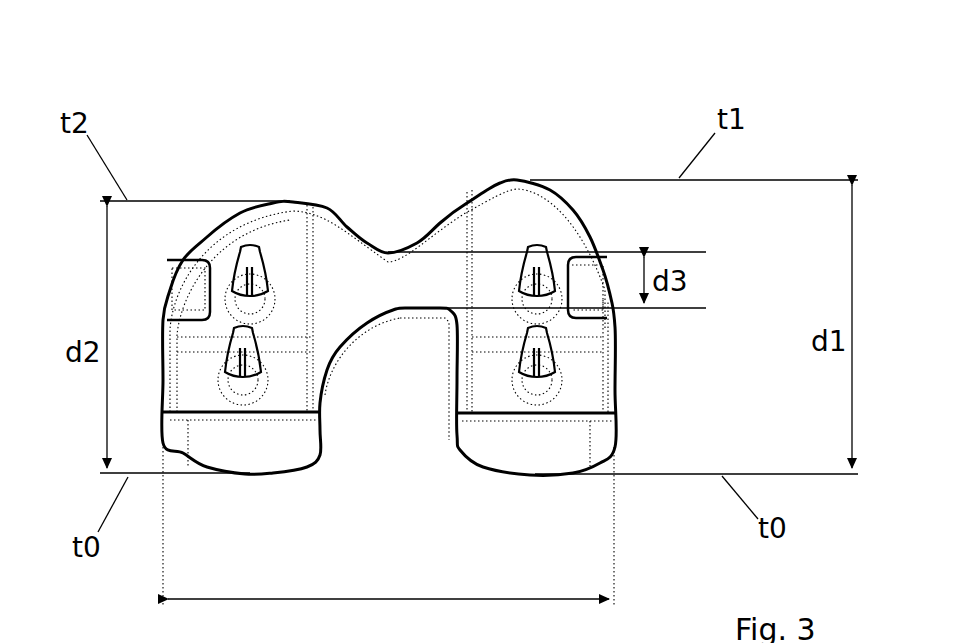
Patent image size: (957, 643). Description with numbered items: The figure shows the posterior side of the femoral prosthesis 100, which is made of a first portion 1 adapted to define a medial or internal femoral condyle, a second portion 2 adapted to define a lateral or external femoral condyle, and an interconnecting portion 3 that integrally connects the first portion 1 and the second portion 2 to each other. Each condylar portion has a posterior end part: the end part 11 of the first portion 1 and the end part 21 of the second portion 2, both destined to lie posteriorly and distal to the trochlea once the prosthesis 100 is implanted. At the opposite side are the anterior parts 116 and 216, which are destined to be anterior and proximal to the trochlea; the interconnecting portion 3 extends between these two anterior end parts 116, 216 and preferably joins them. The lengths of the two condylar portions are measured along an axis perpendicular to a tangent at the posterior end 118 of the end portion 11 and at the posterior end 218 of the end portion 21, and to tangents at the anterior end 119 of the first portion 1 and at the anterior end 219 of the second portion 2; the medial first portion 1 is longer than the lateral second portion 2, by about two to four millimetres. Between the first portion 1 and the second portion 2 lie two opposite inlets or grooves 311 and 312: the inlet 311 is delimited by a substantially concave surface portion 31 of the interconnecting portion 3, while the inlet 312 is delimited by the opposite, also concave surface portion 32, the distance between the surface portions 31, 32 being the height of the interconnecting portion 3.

The prosthesis 100 is at (196, 152).
The first portion 1 is at (480, 232).
The second portion 2 is at (293, 242).
The interconnecting portion 3 is at (390, 282).
The end part of first portion 11 is at (513, 465).
The end part of second portion 21 is at (293, 457).
The surface portion 31 is at (390, 245).
The surface portion 32 is at (403, 312).
The inlet 311 is at (365, 222).
The inlet 312 is at (395, 312).
The anterior part of first portion 116 is at (517, 176).
The anterior end of first portion 119 is at (530, 178).
The posterior end of end portion 11 118 is at (542, 475).
The anterior part of second portion 216 is at (296, 196).
The anterior end of second portion 219 is at (278, 200).
The posterior end of end portion 21 218 is at (242, 477).